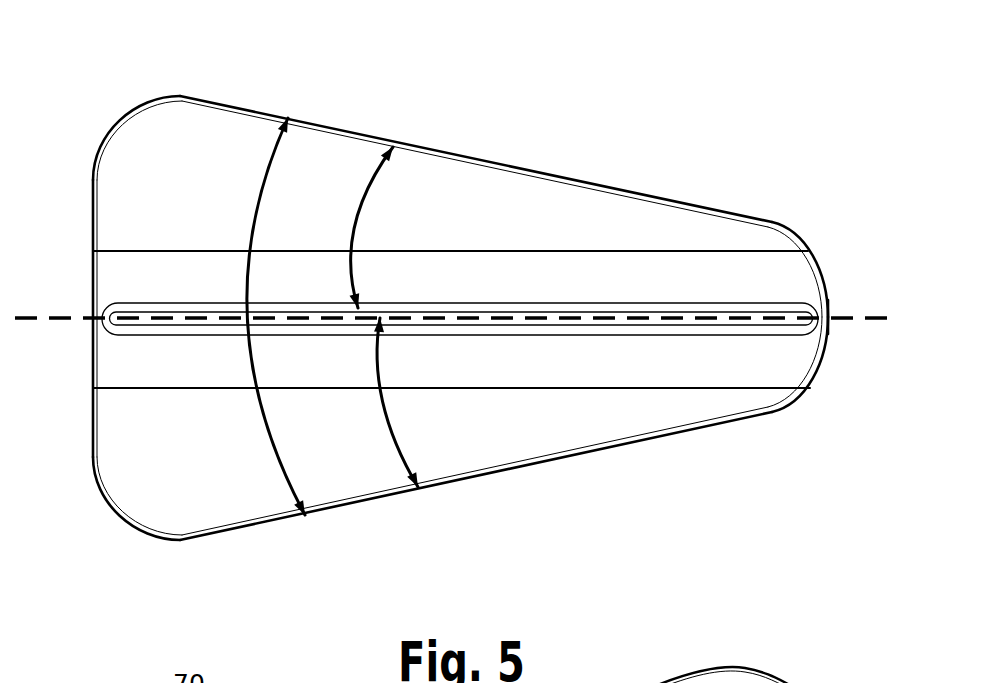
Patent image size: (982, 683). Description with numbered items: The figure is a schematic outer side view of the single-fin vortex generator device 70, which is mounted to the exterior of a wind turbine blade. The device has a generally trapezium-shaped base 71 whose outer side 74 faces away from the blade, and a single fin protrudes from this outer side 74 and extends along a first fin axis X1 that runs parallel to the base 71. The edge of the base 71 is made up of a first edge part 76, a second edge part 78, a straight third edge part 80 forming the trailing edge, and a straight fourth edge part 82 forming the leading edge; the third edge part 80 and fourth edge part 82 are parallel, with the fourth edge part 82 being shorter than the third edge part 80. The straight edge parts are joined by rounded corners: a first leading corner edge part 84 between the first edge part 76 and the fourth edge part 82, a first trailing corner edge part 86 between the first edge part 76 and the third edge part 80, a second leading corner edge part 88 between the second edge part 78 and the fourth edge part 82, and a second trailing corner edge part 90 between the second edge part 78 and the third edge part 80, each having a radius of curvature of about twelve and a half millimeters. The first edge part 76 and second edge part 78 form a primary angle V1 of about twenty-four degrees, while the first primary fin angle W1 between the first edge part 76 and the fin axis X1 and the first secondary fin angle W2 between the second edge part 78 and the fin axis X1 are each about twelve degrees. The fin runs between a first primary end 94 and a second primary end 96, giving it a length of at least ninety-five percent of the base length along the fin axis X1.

The single-fin vortex generator device 70 is at (460, 47).
The base 71 is at (668, 222).
The outer side 74 is at (418, 175).
The first edge part 76 is at (602, 183).
The second edge part 78 is at (600, 445).
The third edge part 80 is at (93, 368).
The fourth edge part 82 is at (827, 316).
The first leading corner edge part 84 is at (808, 252).
The first trailing corner edge part 86 is at (120, 137).
The second leading corner edge part 88 is at (812, 380).
The second trailing corner edge part 90 is at (117, 516).
The first primary end 94 is at (815, 308).
The second primary end 96 is at (107, 318).
The first fin axis X1 is at (858, 322).
The primary angle V1 is at (262, 418).
The first primary fin angle W1 is at (355, 235).
The first secondary fin angle W2 is at (383, 410).